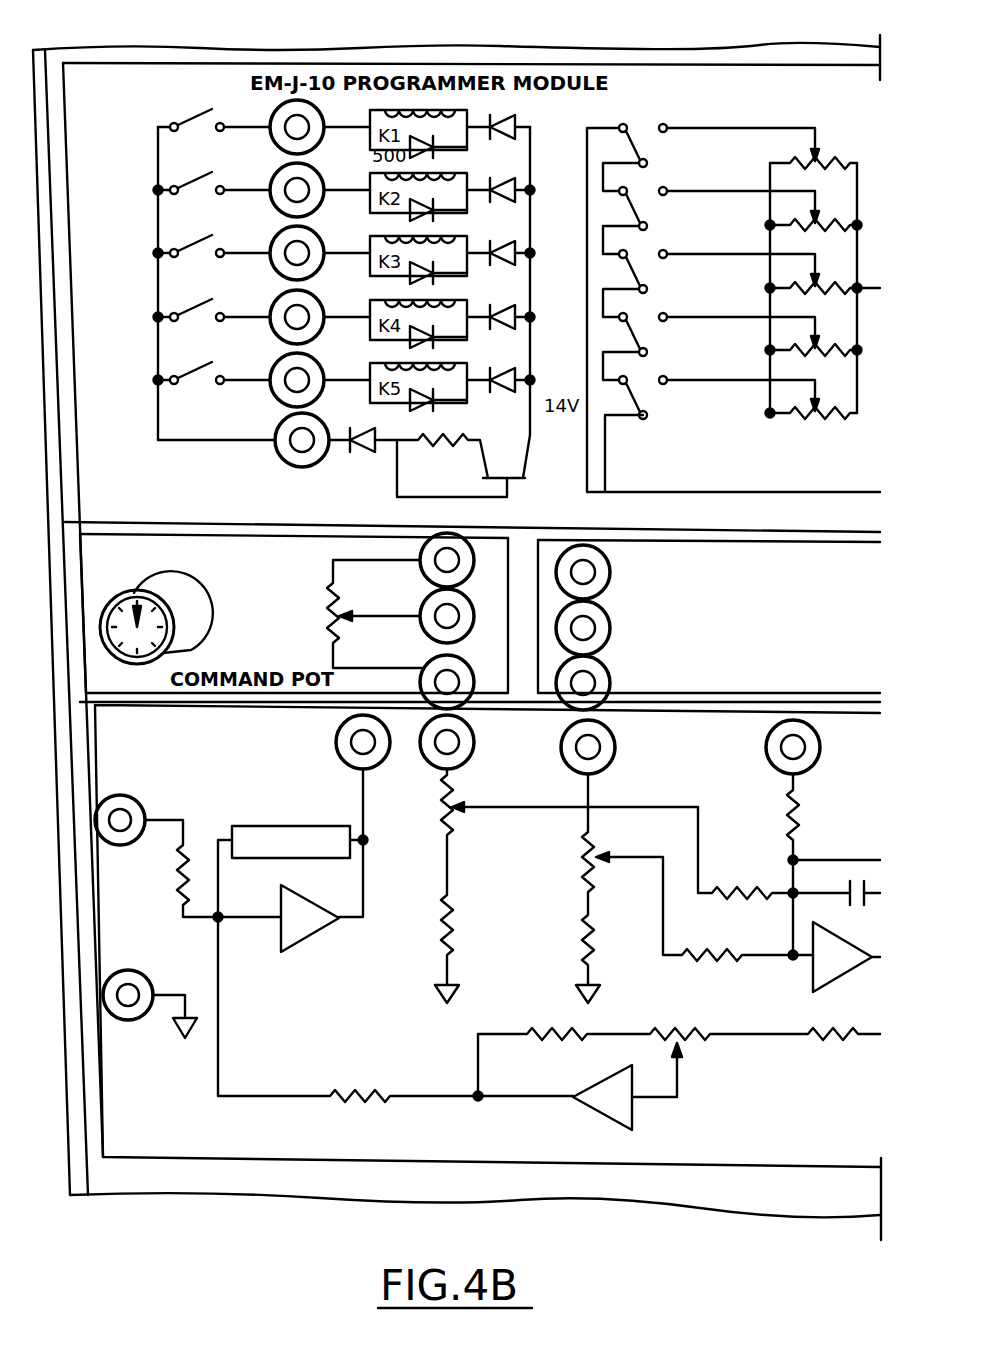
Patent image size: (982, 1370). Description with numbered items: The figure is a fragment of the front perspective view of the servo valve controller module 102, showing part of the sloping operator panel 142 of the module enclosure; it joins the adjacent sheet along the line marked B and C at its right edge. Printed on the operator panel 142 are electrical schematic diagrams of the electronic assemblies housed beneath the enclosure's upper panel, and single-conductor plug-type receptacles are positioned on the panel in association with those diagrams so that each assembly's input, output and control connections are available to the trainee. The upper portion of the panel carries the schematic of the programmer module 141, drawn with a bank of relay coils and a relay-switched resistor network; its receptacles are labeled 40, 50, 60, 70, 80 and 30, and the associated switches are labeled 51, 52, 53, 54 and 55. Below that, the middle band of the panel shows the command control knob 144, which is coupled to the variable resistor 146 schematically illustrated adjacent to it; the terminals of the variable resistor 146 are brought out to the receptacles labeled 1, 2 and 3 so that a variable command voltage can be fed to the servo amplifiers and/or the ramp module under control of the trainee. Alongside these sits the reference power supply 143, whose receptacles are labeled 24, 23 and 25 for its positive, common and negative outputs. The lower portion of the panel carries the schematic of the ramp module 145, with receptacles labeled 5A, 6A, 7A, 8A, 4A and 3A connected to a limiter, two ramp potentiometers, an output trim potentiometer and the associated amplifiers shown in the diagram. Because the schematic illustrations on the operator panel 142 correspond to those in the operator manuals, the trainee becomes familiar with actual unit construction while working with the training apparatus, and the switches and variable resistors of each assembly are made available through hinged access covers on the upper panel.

The servo valve controller module 102 is at (484, 46).
The operator panel 142 is at (64, 64).
The programmer module 141 is at (648, 104).
The power supply 143 is at (707, 627).
The command control knob 144 is at (196, 603).
The ramp module 145 is at (487, 922).
The variable resistor 146 is at (324, 636).
The terminal 40 is at (282, 127).
The terminal 50 is at (282, 190).
The terminal 60 is at (282, 253).
The terminal 70 is at (282, 317).
The terminal 80 is at (282, 380).
The terminal 30 is at (286, 440).
The switch 51 is at (214, 130).
The switch 52 is at (214, 193).
The switch 53 is at (214, 256).
The switch 54 is at (214, 320).
The switch 55 is at (214, 383).
The terminal 1 is at (437, 560).
The terminal 2 is at (437, 616).
The terminal 3 is at (437, 678).
The +12V terminal 24 is at (634, 572).
The common terminal 23 is at (633, 628).
The -12V terminal 25 is at (631, 683).
The terminal 3A is at (150, 1004).
The terminal 4A is at (796, 762).
The terminal 5A is at (132, 815).
The terminal 6A is at (373, 749).
The terminal 7A is at (460, 749).
The terminal 8A is at (603, 752).